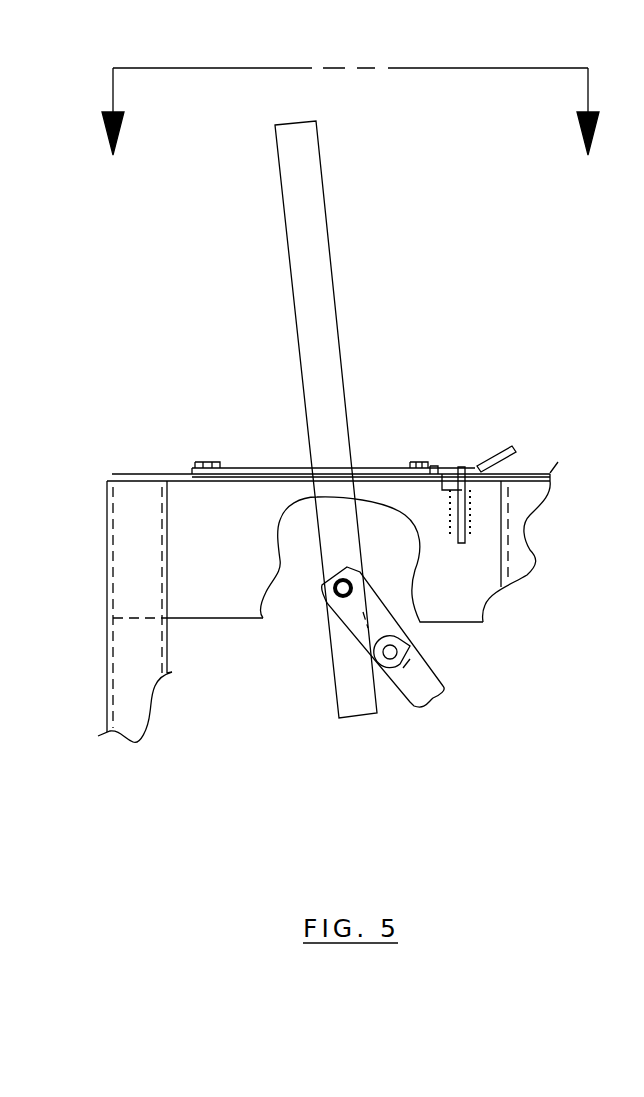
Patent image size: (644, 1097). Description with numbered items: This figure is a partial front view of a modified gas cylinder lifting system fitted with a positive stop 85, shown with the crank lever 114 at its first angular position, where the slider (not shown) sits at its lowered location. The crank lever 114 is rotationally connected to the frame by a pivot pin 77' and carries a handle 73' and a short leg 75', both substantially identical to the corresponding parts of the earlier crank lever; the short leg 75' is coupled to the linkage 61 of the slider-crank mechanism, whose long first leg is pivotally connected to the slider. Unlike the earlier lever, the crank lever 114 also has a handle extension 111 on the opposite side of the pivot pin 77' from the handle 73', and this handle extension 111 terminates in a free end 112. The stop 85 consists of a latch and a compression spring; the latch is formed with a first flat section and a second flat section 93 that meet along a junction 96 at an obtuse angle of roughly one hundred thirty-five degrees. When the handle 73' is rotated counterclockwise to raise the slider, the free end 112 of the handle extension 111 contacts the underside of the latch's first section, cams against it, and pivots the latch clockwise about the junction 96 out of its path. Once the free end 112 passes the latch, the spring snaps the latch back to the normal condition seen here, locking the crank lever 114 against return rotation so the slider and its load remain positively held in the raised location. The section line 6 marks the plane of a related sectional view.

The section line 6 is at (350, 126).
The handle 73' is at (326, 501).
The crank lever 114 is at (340, 258).
The handle extension 111 is at (353, 689).
The free end 112 is at (359, 718).
The short leg 75' is at (451, 637).
The pivot pin 77' is at (267, 643).
The linkage 61 is at (406, 718).
The junction 96 is at (476, 465).
The second flat section 93 is at (493, 462).
The stop 85 is at (526, 448).